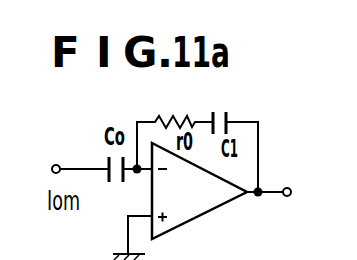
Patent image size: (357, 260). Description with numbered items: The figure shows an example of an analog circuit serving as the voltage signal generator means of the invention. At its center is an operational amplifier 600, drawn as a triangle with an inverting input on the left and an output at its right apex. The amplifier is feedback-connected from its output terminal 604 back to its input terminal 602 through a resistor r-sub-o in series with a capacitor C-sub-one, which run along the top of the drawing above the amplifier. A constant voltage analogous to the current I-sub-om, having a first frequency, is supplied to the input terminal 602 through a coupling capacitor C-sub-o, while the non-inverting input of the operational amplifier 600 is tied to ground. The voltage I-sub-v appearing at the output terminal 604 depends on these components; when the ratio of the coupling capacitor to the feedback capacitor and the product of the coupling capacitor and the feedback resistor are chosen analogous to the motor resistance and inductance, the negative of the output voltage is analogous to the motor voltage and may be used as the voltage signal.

The operational amplifier 600 is at (212, 202).
The input terminal 602 is at (53, 164).
The output terminal 604 is at (287, 196).